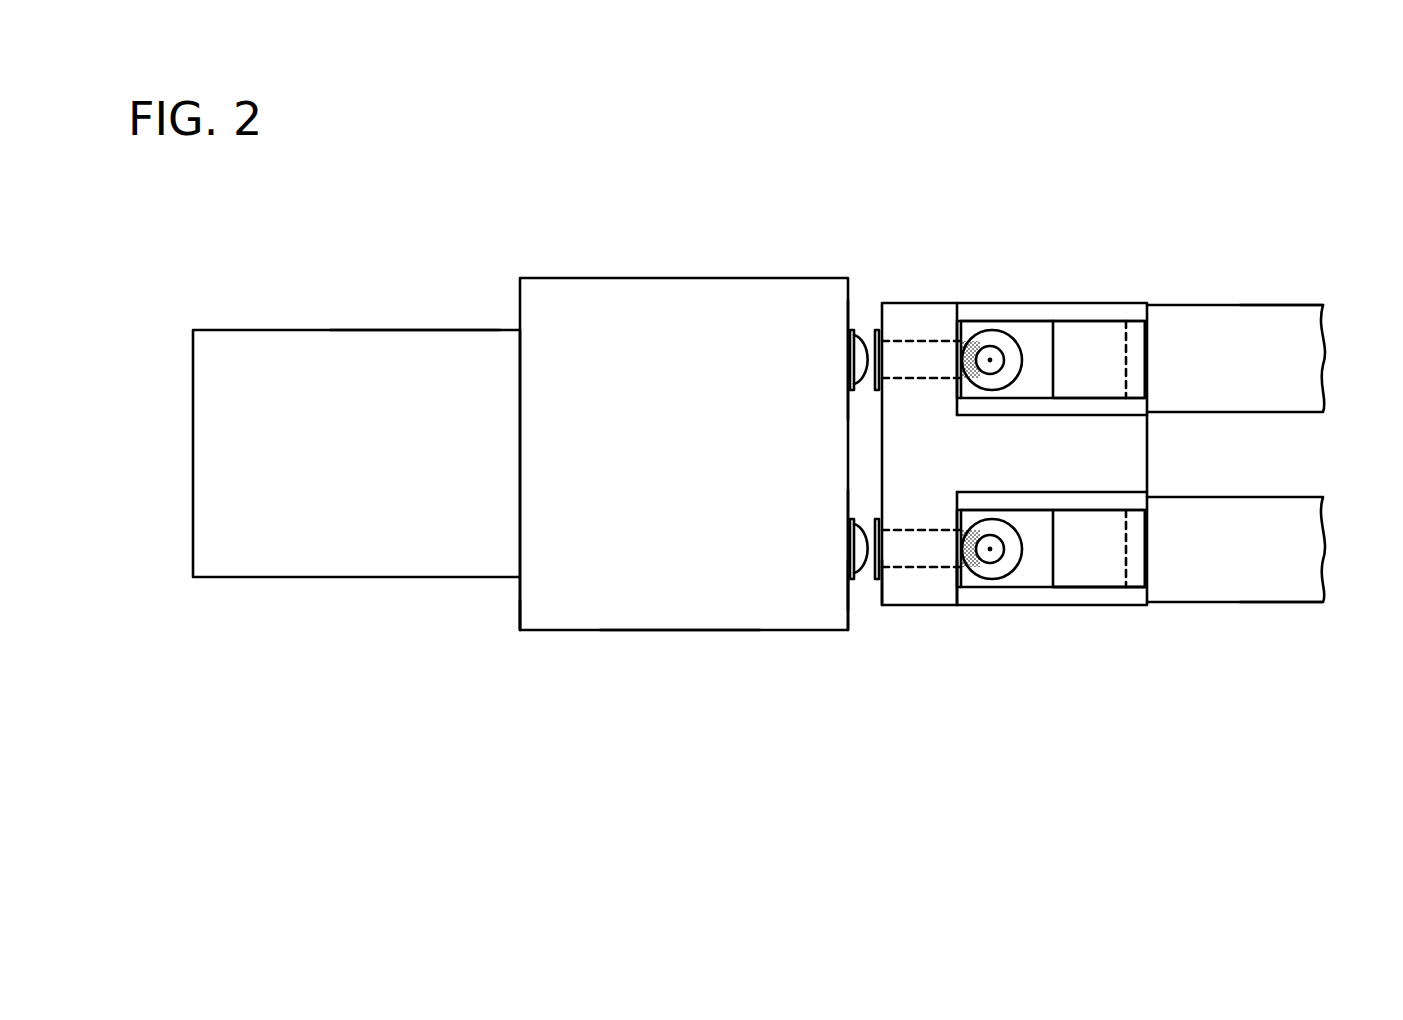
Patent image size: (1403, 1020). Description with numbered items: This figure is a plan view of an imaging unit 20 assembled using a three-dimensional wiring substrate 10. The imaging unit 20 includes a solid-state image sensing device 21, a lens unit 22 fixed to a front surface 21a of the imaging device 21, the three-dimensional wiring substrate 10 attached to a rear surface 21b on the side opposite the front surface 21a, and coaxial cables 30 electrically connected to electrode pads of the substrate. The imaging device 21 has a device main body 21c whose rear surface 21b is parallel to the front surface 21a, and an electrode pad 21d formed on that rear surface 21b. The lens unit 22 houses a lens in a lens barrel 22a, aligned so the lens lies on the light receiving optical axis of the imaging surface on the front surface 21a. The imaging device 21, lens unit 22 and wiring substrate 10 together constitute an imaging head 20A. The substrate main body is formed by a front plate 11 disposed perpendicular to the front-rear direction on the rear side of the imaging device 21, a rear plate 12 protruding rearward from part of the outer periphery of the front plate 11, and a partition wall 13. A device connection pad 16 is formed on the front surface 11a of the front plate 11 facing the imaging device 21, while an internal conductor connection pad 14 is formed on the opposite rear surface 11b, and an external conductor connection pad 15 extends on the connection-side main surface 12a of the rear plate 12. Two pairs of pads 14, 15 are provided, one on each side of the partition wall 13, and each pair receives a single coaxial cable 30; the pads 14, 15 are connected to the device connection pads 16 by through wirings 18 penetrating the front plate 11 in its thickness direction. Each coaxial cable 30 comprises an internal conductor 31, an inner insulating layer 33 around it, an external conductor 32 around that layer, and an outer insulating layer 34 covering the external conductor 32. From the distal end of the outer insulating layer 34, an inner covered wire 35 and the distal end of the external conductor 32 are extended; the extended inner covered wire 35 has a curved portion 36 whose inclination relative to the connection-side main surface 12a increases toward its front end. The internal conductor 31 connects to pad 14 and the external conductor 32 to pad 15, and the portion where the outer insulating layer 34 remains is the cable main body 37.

The three-dimensional wiring substrate 10 is at (1014, 382).
The front plate 11 is at (925, 311).
The front surface 11a is at (881, 593).
The rear surface 11b is at (957, 596).
The rear plate 12 is at (1126, 600).
The connection-side main surface 12a is at (1075, 596).
The partition wall 13 is at (1132, 452).
The internal conductor connection pad 14 is at (968, 324).
The external conductor connection pad 15 is at (1005, 320).
The device connection pad 16 is at (853, 331).
The through wiring 18 is at (912, 381).
The imaging unit 20 is at (684, 457).
The imaging head 20A is at (519, 634).
The solid-state image sensing device 21 is at (612, 634).
The front surface 21a is at (518, 600).
The rear surface 21b is at (851, 593).
The device main body 21c is at (683, 612).
The electrode pad 21d is at (852, 352).
The lens unit 22 is at (313, 328).
The lens barrel 22a is at (393, 353).
The coaxial cable 30 is at (1261, 452).
The internal conductor 31 is at (992, 360).
The external conductor 32 is at (1097, 322).
The inner insulating layer 33 is at (990, 384).
The outer insulating layer 34 is at (1272, 326).
The inner covered wire 35 is at (1040, 322).
The curved portion 36 is at (1022, 392).
The cable main body 37 is at (1310, 308).